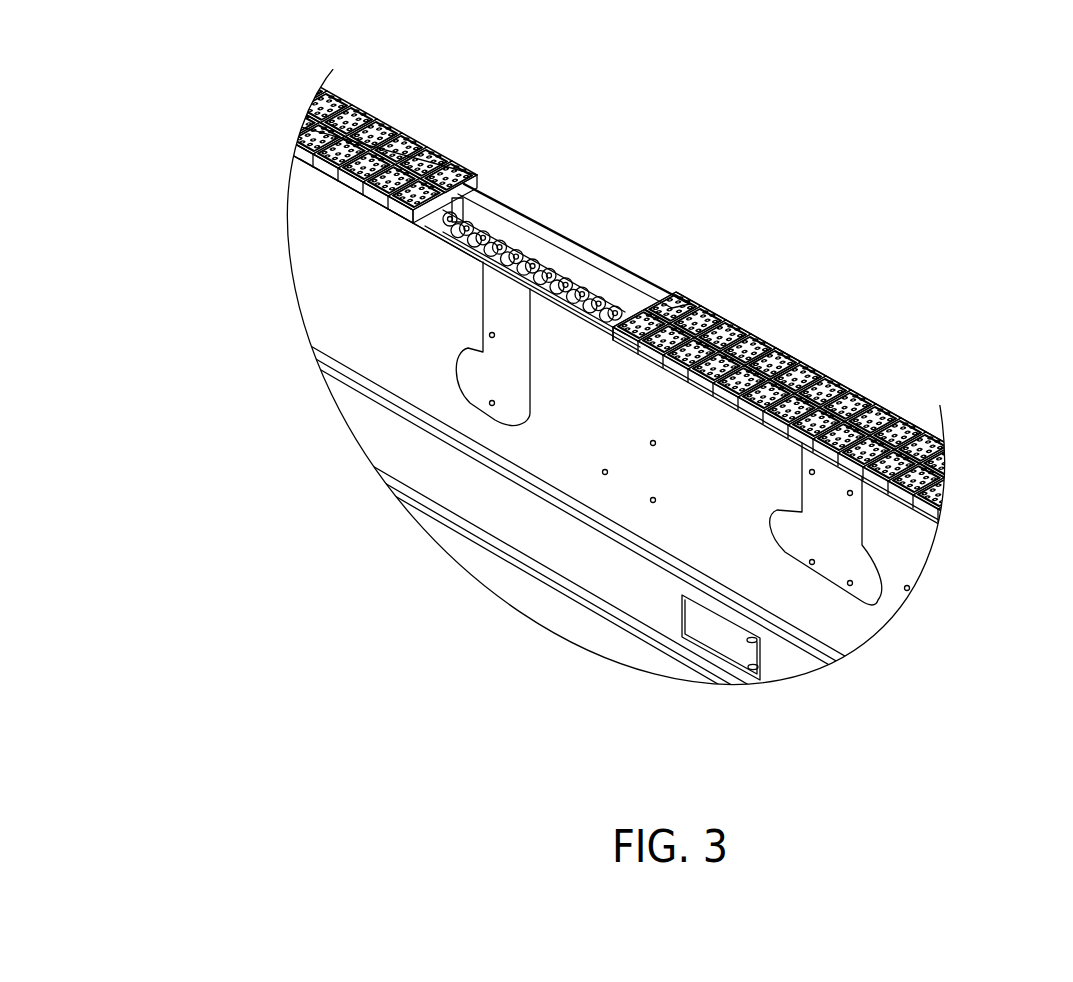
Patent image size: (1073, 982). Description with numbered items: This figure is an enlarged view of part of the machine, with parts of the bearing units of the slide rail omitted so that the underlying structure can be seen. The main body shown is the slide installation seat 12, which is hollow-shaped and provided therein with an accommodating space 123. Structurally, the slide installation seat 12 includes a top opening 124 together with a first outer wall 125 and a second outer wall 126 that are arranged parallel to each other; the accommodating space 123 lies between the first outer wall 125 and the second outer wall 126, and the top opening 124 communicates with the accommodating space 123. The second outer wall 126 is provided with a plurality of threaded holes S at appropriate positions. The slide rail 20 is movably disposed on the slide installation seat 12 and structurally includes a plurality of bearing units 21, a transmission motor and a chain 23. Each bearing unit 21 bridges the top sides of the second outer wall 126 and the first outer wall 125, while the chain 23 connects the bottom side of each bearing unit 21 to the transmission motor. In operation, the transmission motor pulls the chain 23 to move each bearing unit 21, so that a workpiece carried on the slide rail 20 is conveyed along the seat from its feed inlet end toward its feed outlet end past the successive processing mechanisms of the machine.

The slide installation seat 12 is at (911, 551).
The slide rail 20 is at (750, 320).
The bearing unit 21 is at (780, 362).
The chain 23 is at (483, 258).
The accommodating space 123 is at (612, 291).
The top opening 124 is at (518, 232).
The first outer wall 125 is at (577, 247).
The second outer wall 126 is at (348, 238).
The threaded hole S is at (492, 405).